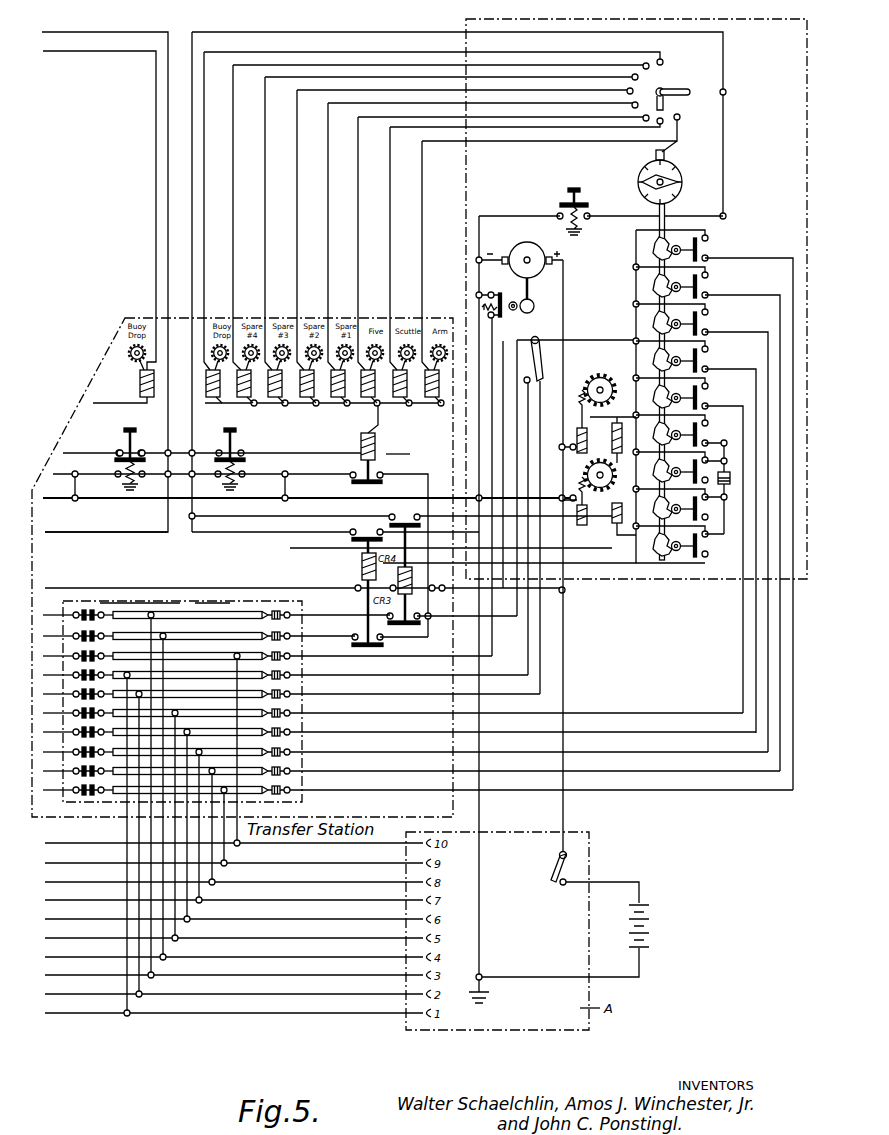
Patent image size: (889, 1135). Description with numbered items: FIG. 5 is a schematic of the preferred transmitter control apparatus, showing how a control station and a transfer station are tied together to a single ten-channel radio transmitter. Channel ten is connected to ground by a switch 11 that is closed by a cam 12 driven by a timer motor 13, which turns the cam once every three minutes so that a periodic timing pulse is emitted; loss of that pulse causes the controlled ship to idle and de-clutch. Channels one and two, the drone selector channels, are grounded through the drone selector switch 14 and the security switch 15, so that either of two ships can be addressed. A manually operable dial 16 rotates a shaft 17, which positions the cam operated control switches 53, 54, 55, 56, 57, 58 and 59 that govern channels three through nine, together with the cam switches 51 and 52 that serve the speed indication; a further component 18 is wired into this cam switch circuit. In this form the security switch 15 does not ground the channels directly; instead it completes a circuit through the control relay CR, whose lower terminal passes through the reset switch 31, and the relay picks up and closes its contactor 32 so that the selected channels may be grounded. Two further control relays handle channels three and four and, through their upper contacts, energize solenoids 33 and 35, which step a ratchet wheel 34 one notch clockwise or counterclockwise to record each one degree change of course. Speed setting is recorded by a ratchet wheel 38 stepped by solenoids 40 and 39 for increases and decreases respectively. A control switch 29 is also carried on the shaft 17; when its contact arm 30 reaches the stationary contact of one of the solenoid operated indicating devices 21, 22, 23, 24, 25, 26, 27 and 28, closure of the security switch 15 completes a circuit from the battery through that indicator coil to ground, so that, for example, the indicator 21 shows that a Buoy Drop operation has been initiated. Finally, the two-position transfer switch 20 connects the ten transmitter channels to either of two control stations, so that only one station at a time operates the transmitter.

The switch 11 is at (503, 284).
The cam 12 is at (534, 300).
The timer motor 13 is at (543, 245).
The drone selector switch 14 is at (545, 362).
The security switch 15 is at (558, 203).
The manually operable dial 16 is at (640, 170).
The dial shaft 17 is at (666, 208).
The fuse 18 is at (731, 472).
The transfer switch 20 is at (263, 600).
The solenoid operated indicating device 21 is at (210, 397).
The solenoid operated indicating device 22 is at (241, 397).
The solenoid operated indicating device 23 is at (272, 397).
The solenoid operated indicating device 24 is at (304, 397).
The solenoid operated indicating device 25 is at (335, 397).
The solenoid operated indicating device 26 is at (365, 397).
The solenoid operated indicating device 27 is at (397, 397).
The solenoid operated indicating device 28 is at (429, 397).
The control switch 29 is at (664, 89).
The contact arm 30 is at (697, 89).
The reset switch 31 is at (240, 440).
The contactor 32 is at (375, 487).
The solenoid 33 is at (577, 510).
The ratchet wheel 34 is at (588, 466).
The solenoid 35 is at (624, 528).
The ratchet wheel 38 is at (602, 375).
The solenoid 39 is at (577, 431).
The solenoid 40 is at (612, 430).
The cam operated control switch S' 51 is at (672, 430).
The cam operated control switch S 52 is at (672, 467).
The cam switch S3 53 is at (672, 541).
The cam switch S4 54 is at (672, 504).
The cam switch S5 55 is at (672, 393).
The cam switch S6 56 is at (672, 356).
The cam switch S7 57 is at (672, 319).
The cam switch S8 58 is at (672, 282).
The cam switch S9 59 is at (672, 245).